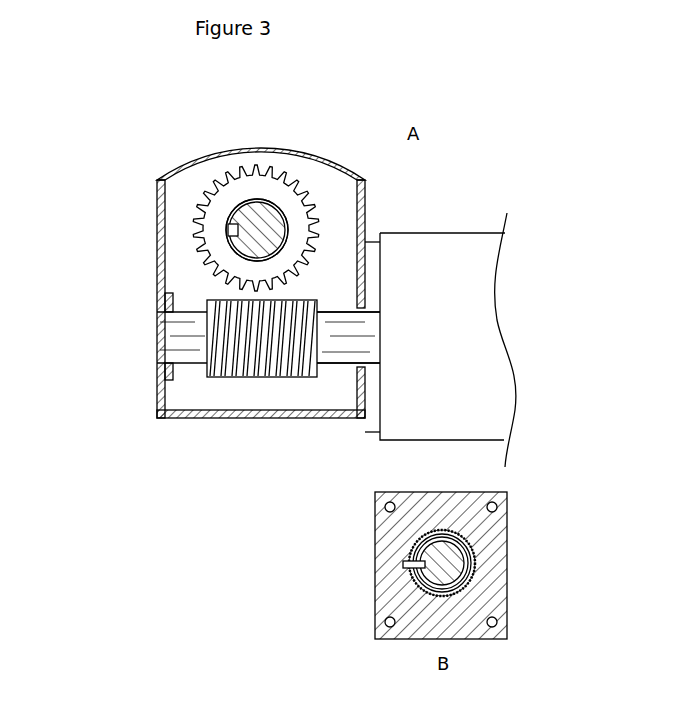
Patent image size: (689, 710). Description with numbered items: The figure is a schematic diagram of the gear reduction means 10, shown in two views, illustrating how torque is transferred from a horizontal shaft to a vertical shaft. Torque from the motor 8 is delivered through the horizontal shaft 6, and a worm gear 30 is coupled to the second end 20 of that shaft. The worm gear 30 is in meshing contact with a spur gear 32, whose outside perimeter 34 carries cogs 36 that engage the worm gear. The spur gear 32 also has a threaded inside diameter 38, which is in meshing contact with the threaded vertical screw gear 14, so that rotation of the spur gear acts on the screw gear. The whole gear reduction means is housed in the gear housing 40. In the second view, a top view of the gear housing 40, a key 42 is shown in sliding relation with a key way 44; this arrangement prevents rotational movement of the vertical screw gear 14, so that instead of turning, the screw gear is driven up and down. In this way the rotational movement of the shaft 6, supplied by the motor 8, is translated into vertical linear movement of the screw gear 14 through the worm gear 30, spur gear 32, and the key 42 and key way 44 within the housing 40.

The gear reduction means 10 is at (167, 478).
The horizontal shaft 6 is at (342, 348).
The motor 8 is at (465, 245).
The vertical screw gear 14 is at (257, 212).
The second end 20 is at (182, 341).
The worm gear 30 is at (268, 362).
The spur gear 32 is at (282, 190).
The outside perimeter 34 is at (204, 238).
The cogs 36 is at (203, 188).
The threaded inside diameter 38 is at (255, 188).
The gear housing 40 is at (365, 200).
The key 42 is at (400, 568).
The key way 44 is at (224, 226).